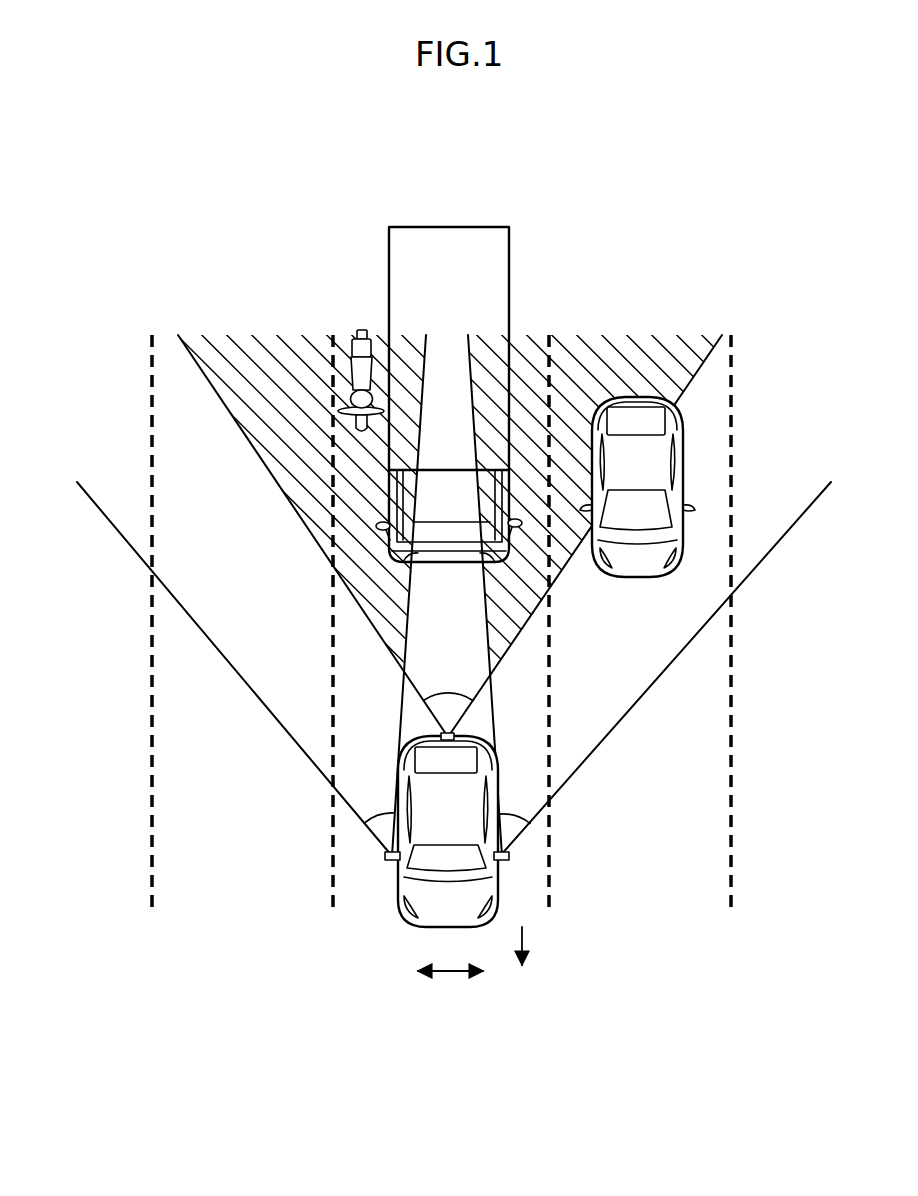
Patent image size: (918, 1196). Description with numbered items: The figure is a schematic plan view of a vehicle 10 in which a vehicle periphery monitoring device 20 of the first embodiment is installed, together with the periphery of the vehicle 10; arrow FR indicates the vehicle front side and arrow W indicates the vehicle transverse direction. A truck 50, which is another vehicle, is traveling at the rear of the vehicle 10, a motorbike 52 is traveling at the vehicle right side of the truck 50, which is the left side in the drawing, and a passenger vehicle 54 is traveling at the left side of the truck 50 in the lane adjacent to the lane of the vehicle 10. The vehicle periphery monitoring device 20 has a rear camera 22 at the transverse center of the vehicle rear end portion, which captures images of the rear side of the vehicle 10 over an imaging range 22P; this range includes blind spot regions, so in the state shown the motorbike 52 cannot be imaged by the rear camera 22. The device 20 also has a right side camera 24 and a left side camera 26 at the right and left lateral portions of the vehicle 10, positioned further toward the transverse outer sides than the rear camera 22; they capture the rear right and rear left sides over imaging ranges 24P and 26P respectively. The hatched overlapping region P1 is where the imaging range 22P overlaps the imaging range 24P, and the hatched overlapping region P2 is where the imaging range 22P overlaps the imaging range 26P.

The vehicle 10 is at (390, 890).
The vehicle periphery monitoring device 20 is at (477, 825).
The rear camera 22 is at (466, 741).
The imaging range of the rear camera 22P is at (477, 660).
The right side camera 24 is at (387, 862).
The imaging range of the right side camera 24P is at (363, 640).
The left side camera 26 is at (512, 850).
The imaging range of the left side camera 26P is at (663, 630).
The truck 50 is at (511, 287).
The motorbike 52 is at (378, 338).
The passenger vehicle 54 is at (686, 440).
The overlapping region P1 is at (347, 543).
The overlapping region P2 is at (558, 550).
The arrow W is at (450, 973).
The arrow FR is at (524, 935).